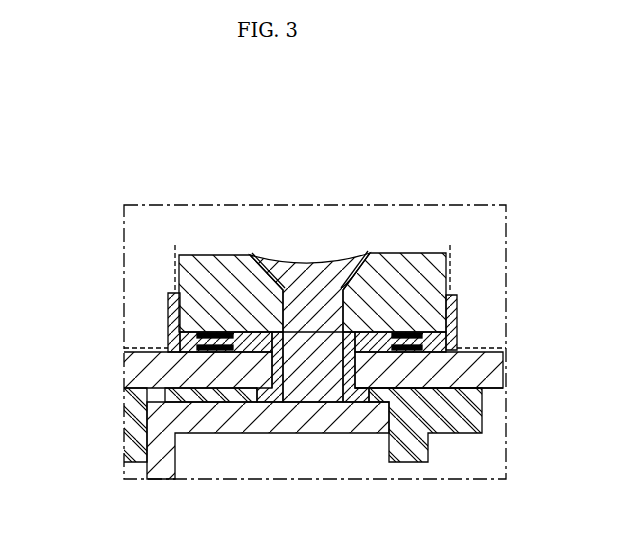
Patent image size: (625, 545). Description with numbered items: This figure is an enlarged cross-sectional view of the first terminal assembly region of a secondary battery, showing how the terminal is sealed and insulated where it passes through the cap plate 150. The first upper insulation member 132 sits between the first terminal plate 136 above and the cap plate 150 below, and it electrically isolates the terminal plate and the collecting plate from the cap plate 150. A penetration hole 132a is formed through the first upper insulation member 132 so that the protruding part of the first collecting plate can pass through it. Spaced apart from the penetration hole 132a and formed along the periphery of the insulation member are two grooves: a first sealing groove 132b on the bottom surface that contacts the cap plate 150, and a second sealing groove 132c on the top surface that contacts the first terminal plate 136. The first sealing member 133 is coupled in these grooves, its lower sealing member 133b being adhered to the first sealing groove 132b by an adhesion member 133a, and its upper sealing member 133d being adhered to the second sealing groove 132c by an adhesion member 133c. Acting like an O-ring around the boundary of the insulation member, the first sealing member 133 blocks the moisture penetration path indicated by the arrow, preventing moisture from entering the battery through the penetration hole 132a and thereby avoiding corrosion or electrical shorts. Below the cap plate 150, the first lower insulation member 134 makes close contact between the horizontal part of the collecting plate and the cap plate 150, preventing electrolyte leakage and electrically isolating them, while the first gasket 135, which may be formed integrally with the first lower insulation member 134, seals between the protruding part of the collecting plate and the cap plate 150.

The first upper insulation member 132 is at (461, 303).
The penetration hole 132a is at (302, 330).
The first sealing groove 132b is at (275, 363).
The second sealing groove 132c is at (363, 333).
The first sealing member 133 is at (403, 328).
The adhesion member 133a is at (197, 336).
The lower sealing member 133b is at (198, 348).
The adhesion member 133c is at (425, 348).
The upper sealing member 133d is at (425, 336).
The first lower insulation member 134 is at (463, 412).
The first gasket 135 is at (291, 336).
The first terminal plate 136 is at (212, 265).
The cap plate 150 is at (218, 382).